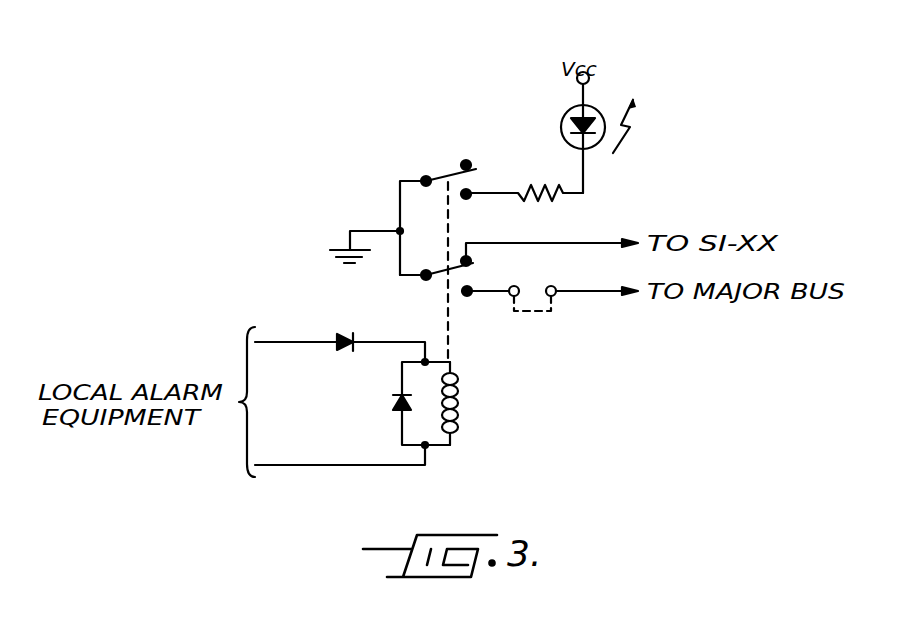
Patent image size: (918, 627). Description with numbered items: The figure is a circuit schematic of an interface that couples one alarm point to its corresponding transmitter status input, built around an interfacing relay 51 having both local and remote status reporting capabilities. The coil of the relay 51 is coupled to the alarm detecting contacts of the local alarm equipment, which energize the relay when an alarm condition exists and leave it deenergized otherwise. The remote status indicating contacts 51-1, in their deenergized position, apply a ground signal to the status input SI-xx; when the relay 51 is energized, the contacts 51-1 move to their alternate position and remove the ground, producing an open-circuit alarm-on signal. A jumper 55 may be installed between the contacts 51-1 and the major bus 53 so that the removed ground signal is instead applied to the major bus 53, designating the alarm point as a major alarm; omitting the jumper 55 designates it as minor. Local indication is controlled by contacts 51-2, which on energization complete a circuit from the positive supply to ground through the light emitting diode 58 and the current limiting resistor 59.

The interfacing relay 51 is at (460, 402).
The remote status indicating contacts 51-1 is at (440, 276).
The local status indicating contacts 51-2 is at (438, 178).
The major bus 53 is at (587, 291).
The jumper 55 is at (535, 311).
The light emitting diode 58 is at (563, 116).
The current limiting resistor 59 is at (542, 184).